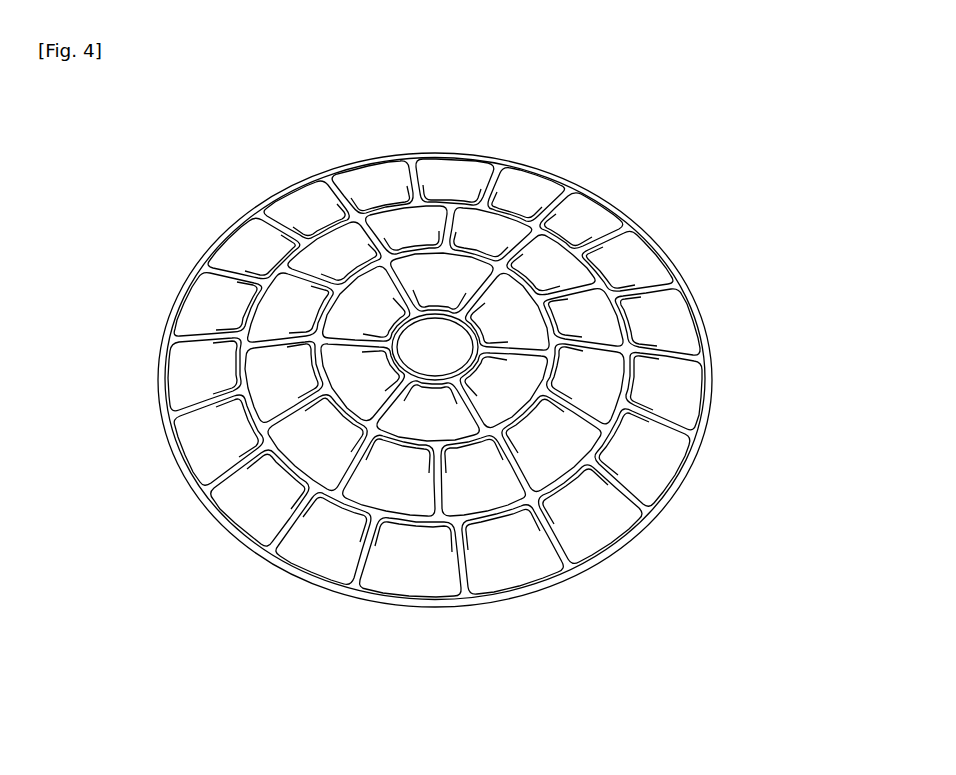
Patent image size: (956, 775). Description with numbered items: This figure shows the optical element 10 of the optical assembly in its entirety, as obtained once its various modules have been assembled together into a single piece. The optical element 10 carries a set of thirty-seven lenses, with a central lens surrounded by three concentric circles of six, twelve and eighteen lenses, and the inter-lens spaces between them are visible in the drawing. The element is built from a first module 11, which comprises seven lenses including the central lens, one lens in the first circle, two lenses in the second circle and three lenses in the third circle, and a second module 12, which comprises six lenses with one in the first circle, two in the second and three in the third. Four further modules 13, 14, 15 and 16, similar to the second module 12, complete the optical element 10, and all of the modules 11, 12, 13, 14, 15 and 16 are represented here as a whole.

The optical element 10 is at (456, 383).
The first module 11 is at (416, 611).
The second module 12 is at (160, 432).
The module 13 is at (205, 262).
The module 14 is at (455, 147).
The module 15 is at (640, 222).
The module 16 is at (683, 486).